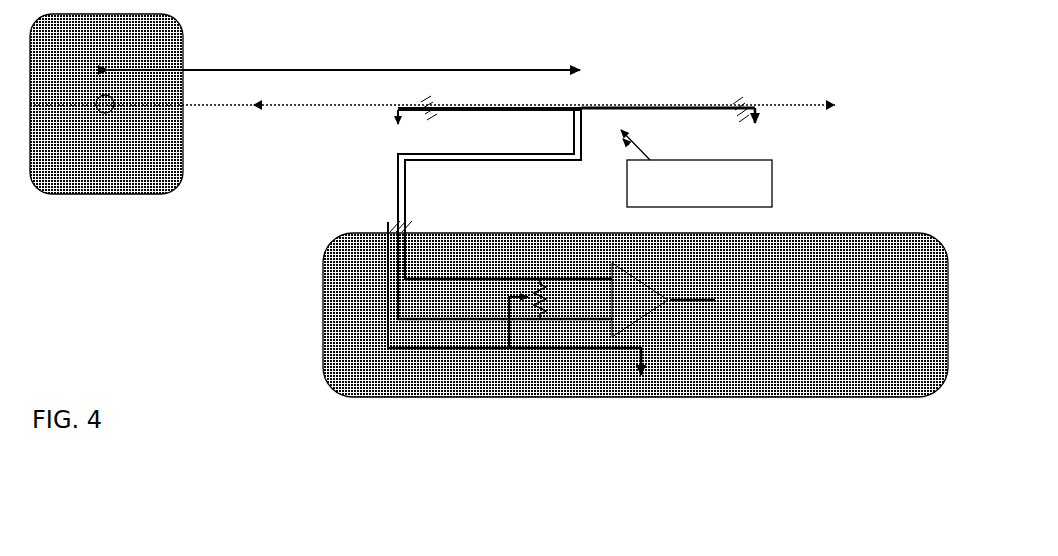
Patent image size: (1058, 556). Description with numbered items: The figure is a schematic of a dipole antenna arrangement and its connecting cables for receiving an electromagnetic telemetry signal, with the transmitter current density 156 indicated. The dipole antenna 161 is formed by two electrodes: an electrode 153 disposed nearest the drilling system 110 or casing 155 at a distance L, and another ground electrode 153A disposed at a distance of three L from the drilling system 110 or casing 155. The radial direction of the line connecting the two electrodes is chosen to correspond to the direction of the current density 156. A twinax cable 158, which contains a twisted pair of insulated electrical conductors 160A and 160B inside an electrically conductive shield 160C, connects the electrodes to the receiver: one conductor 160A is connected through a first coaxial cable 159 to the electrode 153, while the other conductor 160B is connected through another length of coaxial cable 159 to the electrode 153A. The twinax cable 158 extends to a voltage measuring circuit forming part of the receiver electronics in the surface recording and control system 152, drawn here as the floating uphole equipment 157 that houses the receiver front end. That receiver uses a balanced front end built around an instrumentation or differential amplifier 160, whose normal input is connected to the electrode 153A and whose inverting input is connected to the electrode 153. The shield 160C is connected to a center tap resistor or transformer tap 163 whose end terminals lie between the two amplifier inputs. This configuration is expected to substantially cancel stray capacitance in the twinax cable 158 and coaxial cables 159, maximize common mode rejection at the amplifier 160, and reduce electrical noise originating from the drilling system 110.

The drilling and measurement system 110 is at (106, 104).
The surface recording and control system 152 is at (450, 432).
The electrode 153 is at (390, 126).
The ground electrode 153A is at (743, 124).
The casing 155 is at (107, 118).
The electromagnetic signal transmitter current density 156 is at (302, 120).
The float uphole equipment with UPS 157 is at (635, 315).
The twinax cable 158 is at (411, 197).
The coaxial cable 159 is at (520, 100).
The amplifier 160 is at (640, 302).
The insulated electrical conductor 160A is at (492, 280).
The insulated electrical conductor 160B is at (568, 318).
The shield 160C is at (503, 348).
The dipole antenna 161 is at (696, 168).
The center tap resistor or transformer tap 163 is at (557, 313).